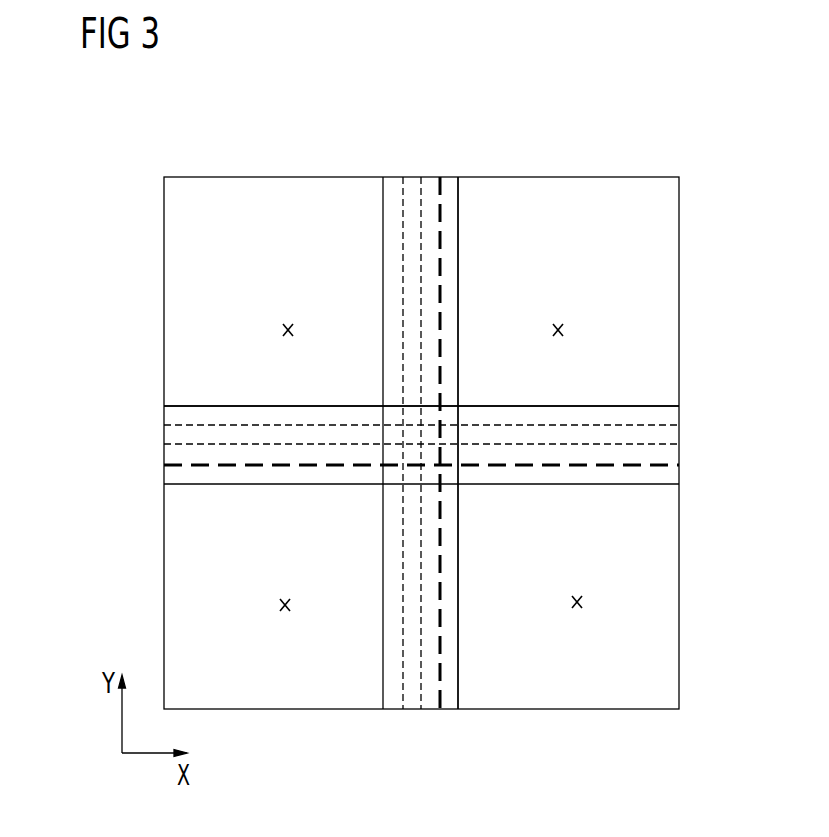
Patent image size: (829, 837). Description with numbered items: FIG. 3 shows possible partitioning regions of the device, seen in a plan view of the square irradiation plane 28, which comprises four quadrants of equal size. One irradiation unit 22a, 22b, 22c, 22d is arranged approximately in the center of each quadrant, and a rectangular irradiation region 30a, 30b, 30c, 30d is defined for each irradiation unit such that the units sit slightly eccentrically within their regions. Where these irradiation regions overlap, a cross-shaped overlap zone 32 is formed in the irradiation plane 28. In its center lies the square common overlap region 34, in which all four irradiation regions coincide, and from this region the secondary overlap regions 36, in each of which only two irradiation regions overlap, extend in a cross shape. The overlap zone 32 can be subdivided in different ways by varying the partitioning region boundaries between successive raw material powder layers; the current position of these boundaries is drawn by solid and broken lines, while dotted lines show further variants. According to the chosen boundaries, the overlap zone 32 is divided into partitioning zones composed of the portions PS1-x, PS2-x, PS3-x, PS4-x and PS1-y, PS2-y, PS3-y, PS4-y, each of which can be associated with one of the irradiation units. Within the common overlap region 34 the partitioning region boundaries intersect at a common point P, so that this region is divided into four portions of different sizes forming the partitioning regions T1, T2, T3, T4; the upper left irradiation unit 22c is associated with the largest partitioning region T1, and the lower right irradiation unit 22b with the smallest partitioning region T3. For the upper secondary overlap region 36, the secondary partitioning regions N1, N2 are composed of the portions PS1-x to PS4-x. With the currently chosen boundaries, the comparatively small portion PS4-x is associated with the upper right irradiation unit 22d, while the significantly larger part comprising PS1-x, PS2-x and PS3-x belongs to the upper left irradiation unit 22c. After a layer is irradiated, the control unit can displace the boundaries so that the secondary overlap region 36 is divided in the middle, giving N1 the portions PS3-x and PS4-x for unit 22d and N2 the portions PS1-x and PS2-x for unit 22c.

The irradiation plane 28 is at (632, 176).
The overlap zone 32 is at (470, 88).
The common overlap region 34 is at (387, 415).
The secondary overlap region 36 is at (480, 303).
The portion PS1x PS1-x is at (398, 177).
The portion PS2x PS2-x is at (420, 177).
The portion PS3x PS3-x is at (440, 177).
The portion PS4x PS4-x is at (505, 158).
The portion PS1y PS1-y is at (165, 408).
The portion PS2y PS2-y is at (165, 435).
The portion PS3y PS3-y is at (165, 447).
The portion PS4y PS4-y is at (165, 477).
The secondary partitioning region N1 is at (462, 205).
The secondary partitioning region N2 is at (380, 205).
The irradiation unit 22a is at (285, 612).
The irradiation unit 22b is at (577, 608).
The irradiation unit 22c is at (283, 330).
The irradiation unit 22d is at (565, 330).
The irradiation region 30a is at (184, 582).
The irradiation region 30b is at (648, 541).
The irradiation region 30c is at (185, 300).
The irradiation region 30d is at (646, 335).
The partitioning region T1 is at (385, 417).
The partitioning region T2 is at (454, 436).
The partitioning region T3 is at (457, 478).
The partitioning region T4 is at (383, 473).
The common point P is at (428, 471).